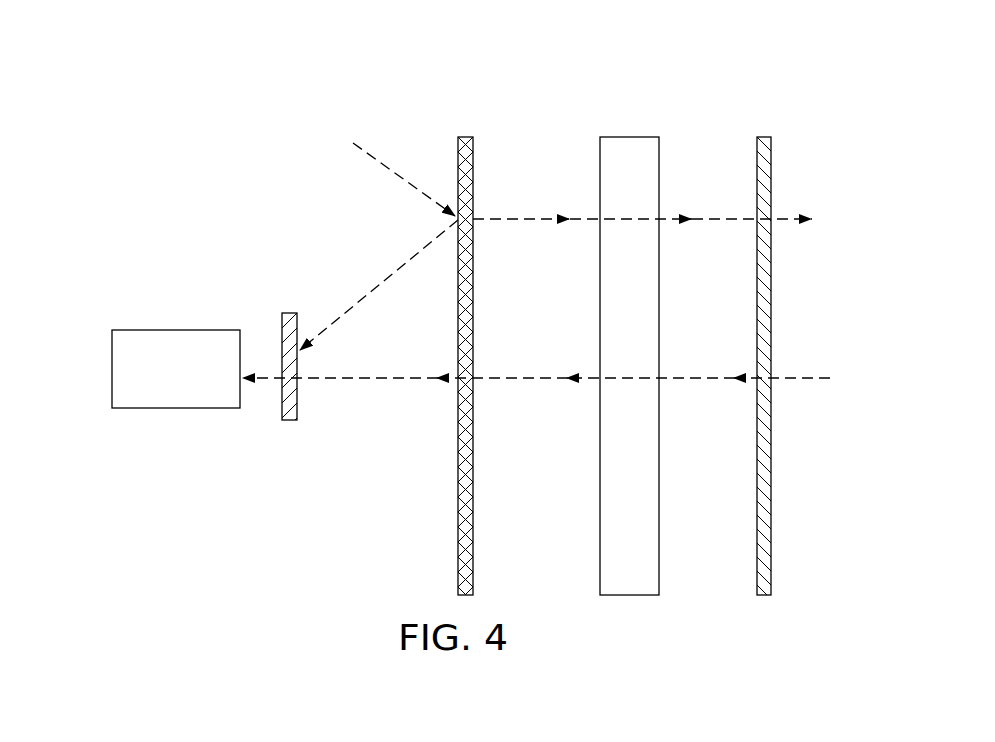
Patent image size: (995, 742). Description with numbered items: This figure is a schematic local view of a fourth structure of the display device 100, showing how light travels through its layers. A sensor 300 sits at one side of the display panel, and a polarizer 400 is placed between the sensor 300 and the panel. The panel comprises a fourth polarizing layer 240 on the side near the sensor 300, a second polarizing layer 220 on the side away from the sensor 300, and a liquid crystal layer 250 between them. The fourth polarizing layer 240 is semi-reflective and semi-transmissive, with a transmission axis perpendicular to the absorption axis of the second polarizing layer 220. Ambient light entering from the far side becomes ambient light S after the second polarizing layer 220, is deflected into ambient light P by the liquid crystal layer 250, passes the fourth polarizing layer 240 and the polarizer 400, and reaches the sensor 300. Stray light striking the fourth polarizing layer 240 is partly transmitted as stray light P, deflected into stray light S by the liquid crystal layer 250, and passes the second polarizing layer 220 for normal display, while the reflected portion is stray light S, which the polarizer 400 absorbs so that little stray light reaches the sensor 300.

The display device 100 is at (86, 43).
The second polarizing layer 220 is at (771, 145).
The fourth polarizing layer 240 is at (458, 157).
The liquid crystal layer 250 is at (622, 137).
The sensor 300 is at (158, 408).
The polarizer 400 is at (292, 420).